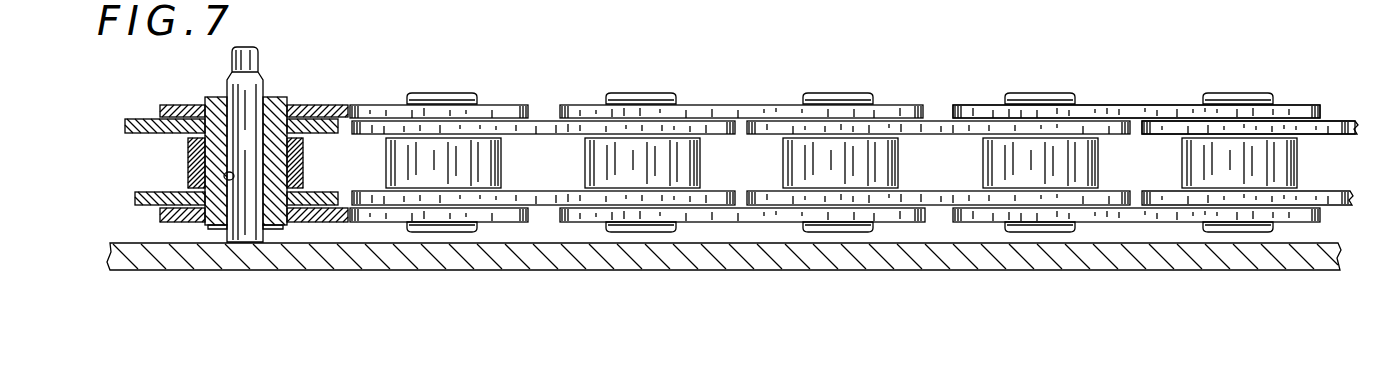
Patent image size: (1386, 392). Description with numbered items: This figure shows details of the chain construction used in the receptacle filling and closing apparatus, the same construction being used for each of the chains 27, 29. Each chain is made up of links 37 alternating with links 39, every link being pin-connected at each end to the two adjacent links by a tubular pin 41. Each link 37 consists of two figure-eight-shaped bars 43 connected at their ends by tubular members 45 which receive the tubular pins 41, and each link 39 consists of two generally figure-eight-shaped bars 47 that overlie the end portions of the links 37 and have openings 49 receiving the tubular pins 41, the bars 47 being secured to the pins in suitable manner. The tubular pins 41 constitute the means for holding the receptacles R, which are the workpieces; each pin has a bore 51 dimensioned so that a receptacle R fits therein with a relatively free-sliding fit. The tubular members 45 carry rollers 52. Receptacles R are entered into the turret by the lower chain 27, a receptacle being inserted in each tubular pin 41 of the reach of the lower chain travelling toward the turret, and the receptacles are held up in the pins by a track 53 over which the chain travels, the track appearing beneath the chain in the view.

The receptacle R is at (258, 52).
The lower chain 27 is at (1180, 86).
The chain 29 is at (1248, 88).
The link 37 is at (548, 116).
The link 39 is at (1326, 64).
The tubular pin 41 is at (279, 98).
The figure-eight-shaped bar 43 is at (543, 190).
The tubular member 45 is at (188, 158).
The figure-eight-shaped bar 47 is at (376, 78).
The opening 49 is at (198, 107).
The bore 51 is at (224, 176).
The roller 52 is at (385, 160).
The track 53 is at (928, 269).